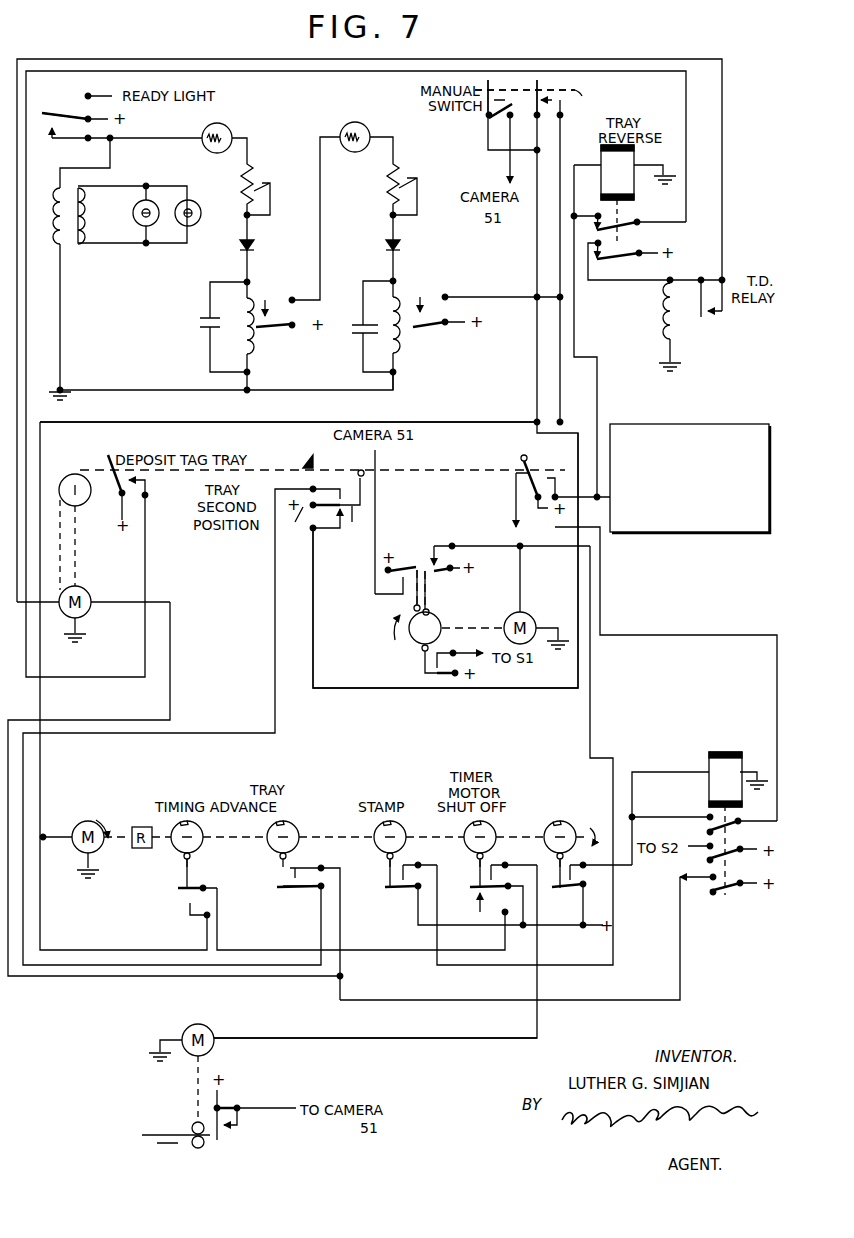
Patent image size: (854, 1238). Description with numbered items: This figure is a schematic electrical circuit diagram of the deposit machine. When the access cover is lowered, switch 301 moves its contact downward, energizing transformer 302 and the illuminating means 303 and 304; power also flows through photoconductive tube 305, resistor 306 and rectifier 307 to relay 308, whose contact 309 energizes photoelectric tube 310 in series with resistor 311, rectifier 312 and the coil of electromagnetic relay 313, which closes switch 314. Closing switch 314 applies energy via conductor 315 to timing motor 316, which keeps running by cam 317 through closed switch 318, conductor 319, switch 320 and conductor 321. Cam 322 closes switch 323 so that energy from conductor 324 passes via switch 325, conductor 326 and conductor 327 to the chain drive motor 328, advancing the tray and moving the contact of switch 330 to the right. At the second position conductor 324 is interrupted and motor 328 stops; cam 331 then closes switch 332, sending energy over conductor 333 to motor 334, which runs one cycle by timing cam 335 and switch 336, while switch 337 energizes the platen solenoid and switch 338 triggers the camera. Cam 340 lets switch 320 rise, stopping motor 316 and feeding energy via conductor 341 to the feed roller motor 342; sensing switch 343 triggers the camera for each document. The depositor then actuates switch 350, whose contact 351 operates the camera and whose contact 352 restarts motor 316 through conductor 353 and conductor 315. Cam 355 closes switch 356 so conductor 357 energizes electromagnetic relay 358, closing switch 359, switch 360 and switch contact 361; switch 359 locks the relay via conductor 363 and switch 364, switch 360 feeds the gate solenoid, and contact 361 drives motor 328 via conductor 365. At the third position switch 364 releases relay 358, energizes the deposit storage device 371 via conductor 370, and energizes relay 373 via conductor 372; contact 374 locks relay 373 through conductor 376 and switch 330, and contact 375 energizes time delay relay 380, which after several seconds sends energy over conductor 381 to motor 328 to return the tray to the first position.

The switch 301 is at (52, 110).
The transformer 302 is at (59, 212).
The illuminating means 303 is at (152, 227).
The illuminating means 304 is at (199, 228).
The photoconductive tube 305 is at (229, 126).
The resistor 306 is at (259, 182).
The rectifier 307 is at (255, 251).
The relay 308 is at (252, 344).
The contact 309 is at (280, 329).
The photoelectric tube 310 is at (342, 150).
The resistor 311 is at (386, 181).
The rectifier 312 is at (389, 241).
The electromagnetic relay 313 is at (400, 300).
The switch 314 is at (440, 328).
The conductor 315 is at (560, 243).
The timing motor 316 is at (75, 848).
The cam 317 is at (173, 851).
The switch 318 is at (178, 897).
The conductor 319 is at (271, 950).
The switch 320 is at (478, 890).
The conductor 321 is at (580, 928).
The cam 322 is at (270, 843).
The switch 323 is at (288, 890).
The conductor 324 is at (309, 525).
The switch 325 is at (353, 528).
The conductor 326 is at (275, 611).
The conductor 327 is at (169, 602).
The chain drive motor 328 is at (92, 616).
The switch 330 is at (110, 493).
The cam 331 is at (375, 851).
The switch 332 is at (400, 889).
The conductor 333 is at (590, 728).
The motor 334 is at (532, 615).
The timing cam 335 is at (409, 638).
The switch 336 is at (440, 572).
The switch 337 is at (462, 672).
The switch 338 is at (397, 568).
The cam 340 is at (466, 840).
The conductor 341 is at (458, 1040).
The feed roller motor 342 is at (214, 1049).
The sensing switch 343 is at (222, 1106).
The switch 350 is at (490, 95).
The contact 351 is at (488, 125).
The contact 352 is at (542, 85).
The conductor 353 is at (485, 688).
The cam 355 is at (548, 838).
The switch 356 is at (568, 888).
The conductor 357 is at (667, 772).
The electromagnetic relay 358 is at (709, 788).
The switch 359 is at (706, 828).
The switch 360 is at (706, 858).
The switch contact 361 is at (713, 893).
The conductor 363 is at (603, 601).
The switch 364 is at (523, 457).
The conductor 365 is at (680, 972).
The conductor 370 is at (582, 511).
The deposit storage device 371 is at (668, 536).
The conductor 372 is at (576, 309).
The relay 373 is at (600, 161).
The contact 374 is at (625, 225).
The contact 375 is at (626, 254).
The conductor 376 is at (687, 138).
The time delay relay 380 is at (663, 319).
The conductor 381 is at (722, 181).